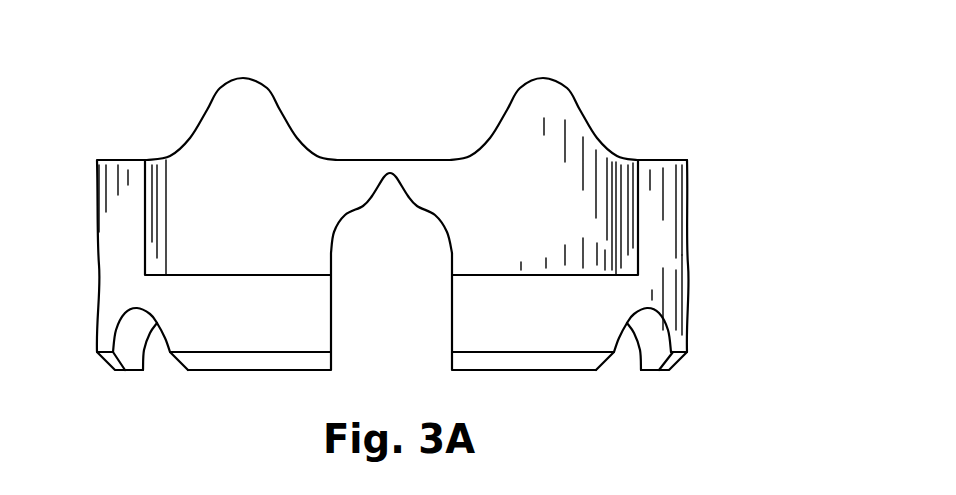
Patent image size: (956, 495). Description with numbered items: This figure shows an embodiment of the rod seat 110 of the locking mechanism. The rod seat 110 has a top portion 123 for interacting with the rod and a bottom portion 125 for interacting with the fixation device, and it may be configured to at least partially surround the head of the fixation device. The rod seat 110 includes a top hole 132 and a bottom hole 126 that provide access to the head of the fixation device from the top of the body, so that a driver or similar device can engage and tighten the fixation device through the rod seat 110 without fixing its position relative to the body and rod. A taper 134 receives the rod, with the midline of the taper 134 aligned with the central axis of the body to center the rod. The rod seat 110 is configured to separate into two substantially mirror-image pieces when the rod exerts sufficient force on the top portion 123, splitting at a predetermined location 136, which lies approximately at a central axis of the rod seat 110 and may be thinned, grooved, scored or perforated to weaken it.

The rod seat 110 is at (429, 226).
The top portion 123 is at (556, 142).
The bottom portion 125 is at (568, 336).
The bottom hole 126 is at (378, 382).
The top hole 132 is at (397, 132).
The taper 134 is at (458, 146).
The predetermined location 136 is at (397, 165).